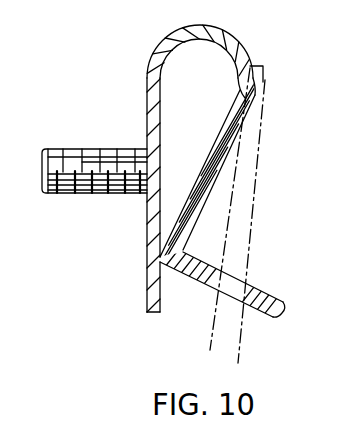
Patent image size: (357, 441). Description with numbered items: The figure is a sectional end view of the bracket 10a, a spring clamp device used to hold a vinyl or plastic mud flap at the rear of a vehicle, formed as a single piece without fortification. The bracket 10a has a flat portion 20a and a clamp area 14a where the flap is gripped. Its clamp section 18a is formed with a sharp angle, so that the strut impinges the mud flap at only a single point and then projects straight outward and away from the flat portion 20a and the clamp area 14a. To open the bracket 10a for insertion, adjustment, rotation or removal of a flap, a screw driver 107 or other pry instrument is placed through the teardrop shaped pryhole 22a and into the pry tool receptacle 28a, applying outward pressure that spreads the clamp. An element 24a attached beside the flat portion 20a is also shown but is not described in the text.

The bracket 10a is at (238, 44).
The clamp area 14a is at (172, 206).
The clamp section 18a is at (167, 270).
The flat portion 20a is at (147, 235).
The pryhole 22a is at (232, 284).
The fastening block 24a is at (88, 148).
The pry tool receptacle 28a is at (250, 89).
The screw driver 107 is at (258, 183).